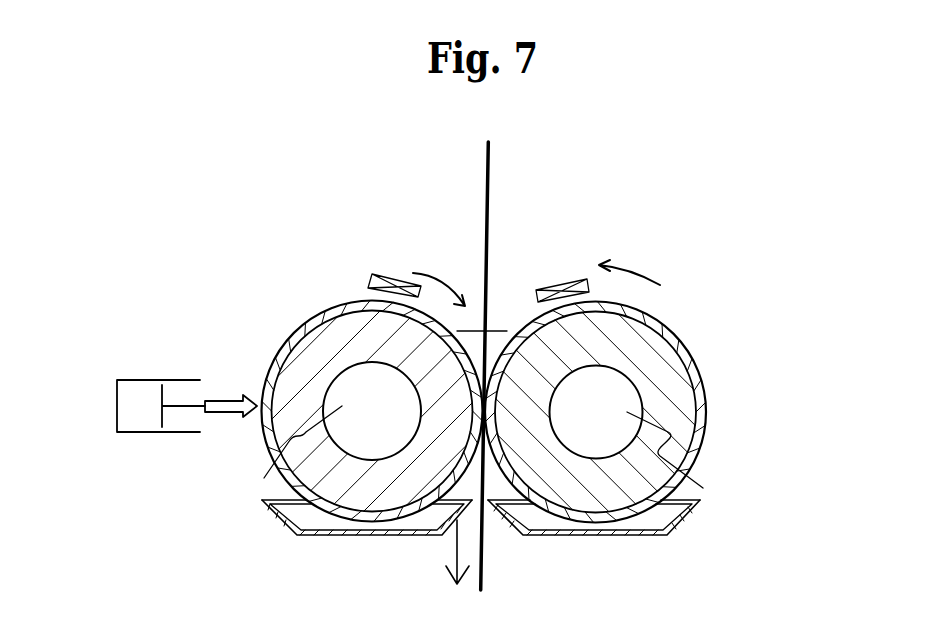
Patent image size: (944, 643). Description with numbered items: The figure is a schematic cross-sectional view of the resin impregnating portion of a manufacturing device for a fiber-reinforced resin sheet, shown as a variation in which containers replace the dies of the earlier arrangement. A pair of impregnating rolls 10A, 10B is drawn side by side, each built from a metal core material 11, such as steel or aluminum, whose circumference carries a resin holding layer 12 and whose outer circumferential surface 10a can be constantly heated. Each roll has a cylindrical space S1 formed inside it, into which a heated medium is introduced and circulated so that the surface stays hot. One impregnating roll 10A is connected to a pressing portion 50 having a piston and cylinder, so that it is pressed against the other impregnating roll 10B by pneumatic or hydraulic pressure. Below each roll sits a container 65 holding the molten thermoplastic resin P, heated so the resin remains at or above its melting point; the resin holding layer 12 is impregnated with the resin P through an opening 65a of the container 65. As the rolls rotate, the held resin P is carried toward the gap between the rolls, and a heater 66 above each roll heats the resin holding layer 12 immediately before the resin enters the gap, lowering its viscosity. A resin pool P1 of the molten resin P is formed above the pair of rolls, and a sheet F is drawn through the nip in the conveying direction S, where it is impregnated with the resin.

The impregnating roll 10A is at (292, 295).
The impregnating roll 10B is at (727, 377).
The circumferential surface 10a is at (272, 352).
The core material 11 is at (322, 338).
The resin holding layer 12 is at (262, 440).
The pressing portion 50 is at (161, 373).
The container 65 is at (378, 534).
The opening 65a is at (262, 500).
The heater 66 is at (383, 272).
The fixing belt F is at (486, 262).
The resin pool P1 is at (490, 331).
The conveyance direction S is at (484, 535).
The cylindrical space S1 is at (492, 452).
The thermoplastic resin P is at (300, 516).